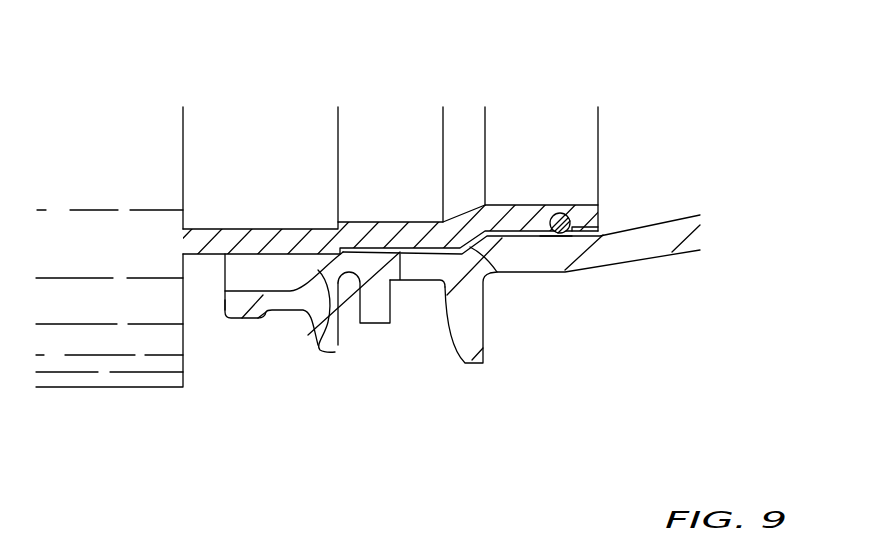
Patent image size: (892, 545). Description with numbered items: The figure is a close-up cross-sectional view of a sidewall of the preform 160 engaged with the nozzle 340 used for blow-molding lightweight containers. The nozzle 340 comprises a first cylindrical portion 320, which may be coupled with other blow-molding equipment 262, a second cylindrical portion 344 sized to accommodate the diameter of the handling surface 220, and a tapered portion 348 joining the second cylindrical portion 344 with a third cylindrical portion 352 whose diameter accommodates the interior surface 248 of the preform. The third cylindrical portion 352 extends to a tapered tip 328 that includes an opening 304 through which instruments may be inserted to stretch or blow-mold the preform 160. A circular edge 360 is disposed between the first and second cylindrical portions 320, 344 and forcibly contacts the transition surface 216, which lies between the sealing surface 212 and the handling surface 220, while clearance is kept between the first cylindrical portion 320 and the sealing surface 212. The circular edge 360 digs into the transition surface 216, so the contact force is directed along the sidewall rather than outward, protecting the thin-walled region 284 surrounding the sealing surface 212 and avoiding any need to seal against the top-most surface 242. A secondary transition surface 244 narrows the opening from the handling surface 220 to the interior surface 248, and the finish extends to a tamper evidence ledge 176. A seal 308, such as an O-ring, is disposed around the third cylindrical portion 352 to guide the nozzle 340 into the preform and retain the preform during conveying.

The nozzle 340 is at (207, 80).
The first cylindrical portion 320 is at (283, 171).
The second cylindrical portion 344 is at (407, 173).
The third cylindrical portion 352 is at (547, 176).
The interior surface 248 is at (672, 165).
The tapered portion 348 is at (462, 130).
The opening 304 is at (602, 121).
The tapered tip 328 is at (583, 212).
The blow-molding equipment 262 is at (134, 388).
The sealing surface 212 is at (278, 285).
The top-most surface 242 is at (221, 305).
The thin-walled region 284 is at (242, 305).
The transition surface 216 is at (335, 352).
The circular edge 360 is at (360, 325).
The handling surface 220 is at (418, 283).
The tamper evidence ledge 176 is at (483, 363).
The secondary transition surface 244 is at (497, 273).
The preform 160 is at (605, 272).
The seal 308 is at (553, 236).